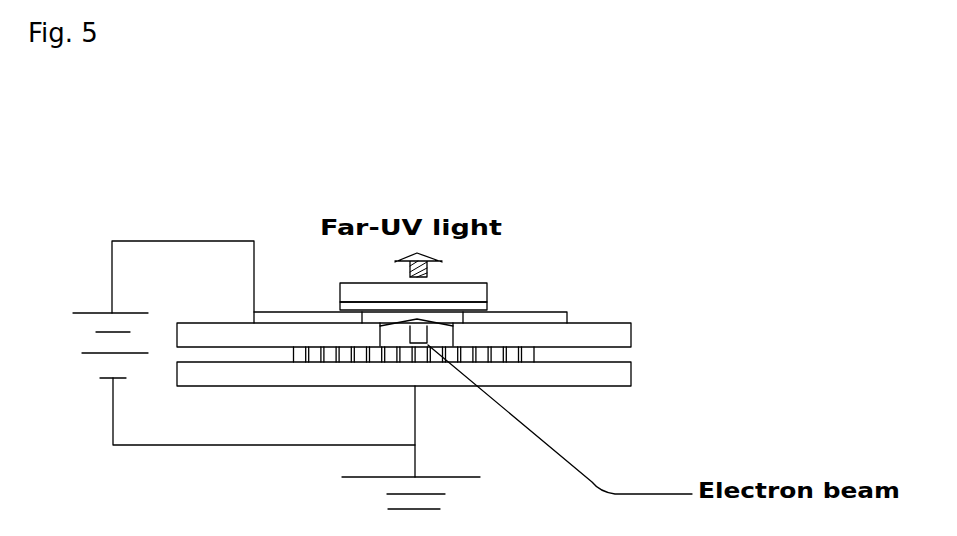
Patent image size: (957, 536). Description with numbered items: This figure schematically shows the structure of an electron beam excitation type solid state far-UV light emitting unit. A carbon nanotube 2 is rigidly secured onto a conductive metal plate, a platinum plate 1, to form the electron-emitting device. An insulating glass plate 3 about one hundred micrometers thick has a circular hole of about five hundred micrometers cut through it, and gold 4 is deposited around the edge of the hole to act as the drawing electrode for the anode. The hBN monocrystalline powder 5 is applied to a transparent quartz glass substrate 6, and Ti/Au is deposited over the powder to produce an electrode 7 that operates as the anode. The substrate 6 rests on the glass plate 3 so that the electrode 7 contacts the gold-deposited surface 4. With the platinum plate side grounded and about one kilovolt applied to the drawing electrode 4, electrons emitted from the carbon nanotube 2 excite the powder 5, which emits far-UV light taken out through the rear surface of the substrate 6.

The conductive metal plate 1 is at (632, 370).
The carbon nanotube 2 is at (535, 355).
The insulating glass plate 3 is at (632, 330).
The gold electrode 4 is at (568, 313).
The hBN monocrystalline powder 5 is at (487, 308).
The substrate 6 is at (487, 306).
The Ti/Au deposition electrode 7 is at (487, 310).